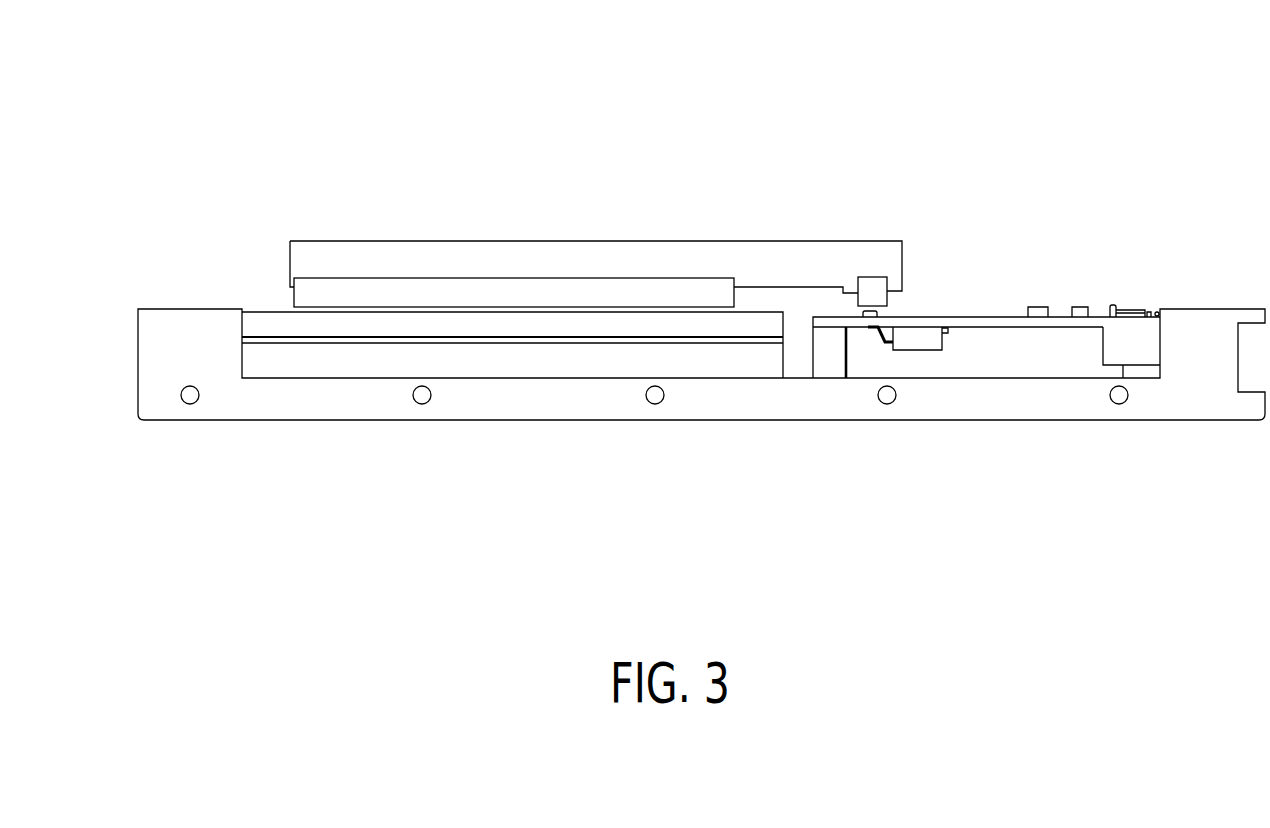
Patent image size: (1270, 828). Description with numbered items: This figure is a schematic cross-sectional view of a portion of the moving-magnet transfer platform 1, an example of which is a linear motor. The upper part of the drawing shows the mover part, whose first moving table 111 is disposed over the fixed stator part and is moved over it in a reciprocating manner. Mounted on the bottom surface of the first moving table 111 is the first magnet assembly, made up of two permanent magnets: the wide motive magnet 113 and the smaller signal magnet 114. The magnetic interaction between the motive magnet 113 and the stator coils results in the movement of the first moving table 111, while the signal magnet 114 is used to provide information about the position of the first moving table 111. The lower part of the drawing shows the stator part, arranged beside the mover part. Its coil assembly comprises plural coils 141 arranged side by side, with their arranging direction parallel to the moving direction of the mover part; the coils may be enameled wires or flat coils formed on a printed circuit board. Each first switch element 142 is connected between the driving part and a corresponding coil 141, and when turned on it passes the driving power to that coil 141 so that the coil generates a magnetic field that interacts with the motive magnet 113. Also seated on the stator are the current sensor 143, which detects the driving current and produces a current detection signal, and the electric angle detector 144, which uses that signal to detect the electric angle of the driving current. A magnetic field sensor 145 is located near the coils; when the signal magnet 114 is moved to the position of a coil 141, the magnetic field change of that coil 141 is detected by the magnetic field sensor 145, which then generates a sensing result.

The moving-magnet transfer platform 1 is at (1254, 72).
The first moving table 111 is at (640, 262).
The motive magnet 113 is at (532, 295).
The signal magnet 114 is at (872, 285).
The coil 141 is at (510, 327).
The first switch element 142 is at (923, 337).
The current sensor 143 is at (1038, 310).
The electric angle detector 144 is at (1078, 310).
The magnetic field sensor 145 is at (872, 315).